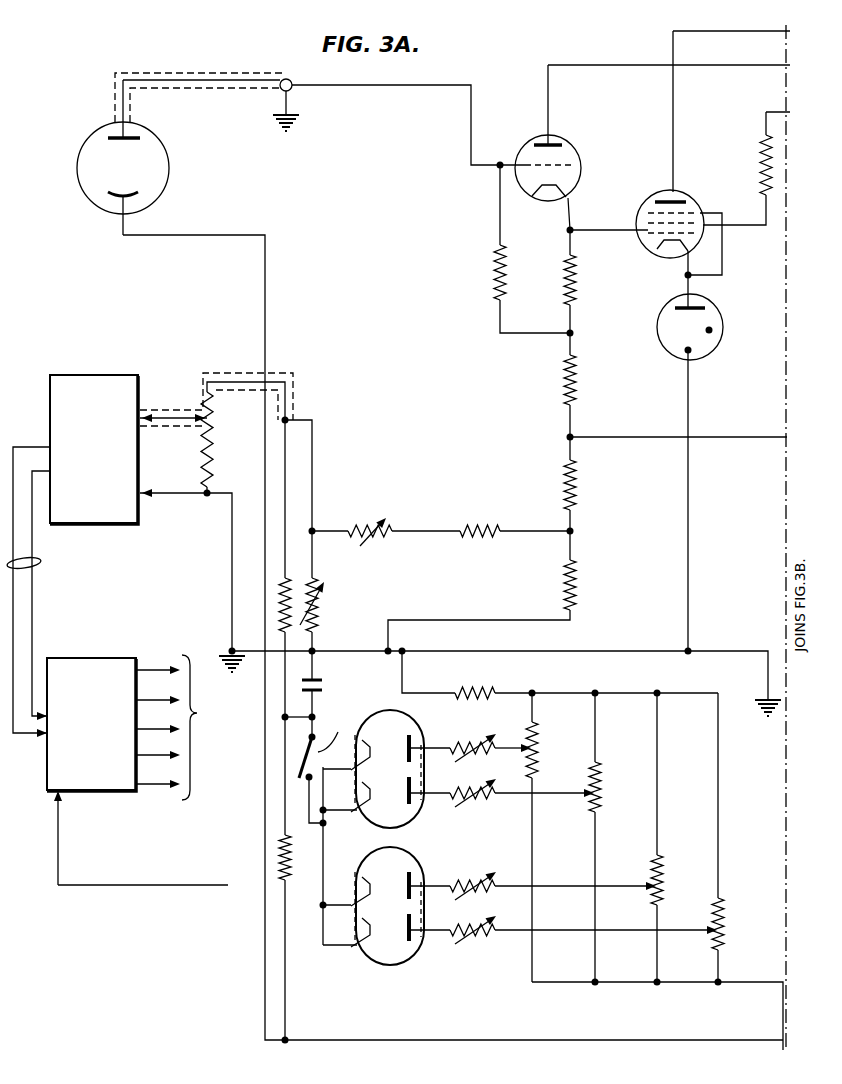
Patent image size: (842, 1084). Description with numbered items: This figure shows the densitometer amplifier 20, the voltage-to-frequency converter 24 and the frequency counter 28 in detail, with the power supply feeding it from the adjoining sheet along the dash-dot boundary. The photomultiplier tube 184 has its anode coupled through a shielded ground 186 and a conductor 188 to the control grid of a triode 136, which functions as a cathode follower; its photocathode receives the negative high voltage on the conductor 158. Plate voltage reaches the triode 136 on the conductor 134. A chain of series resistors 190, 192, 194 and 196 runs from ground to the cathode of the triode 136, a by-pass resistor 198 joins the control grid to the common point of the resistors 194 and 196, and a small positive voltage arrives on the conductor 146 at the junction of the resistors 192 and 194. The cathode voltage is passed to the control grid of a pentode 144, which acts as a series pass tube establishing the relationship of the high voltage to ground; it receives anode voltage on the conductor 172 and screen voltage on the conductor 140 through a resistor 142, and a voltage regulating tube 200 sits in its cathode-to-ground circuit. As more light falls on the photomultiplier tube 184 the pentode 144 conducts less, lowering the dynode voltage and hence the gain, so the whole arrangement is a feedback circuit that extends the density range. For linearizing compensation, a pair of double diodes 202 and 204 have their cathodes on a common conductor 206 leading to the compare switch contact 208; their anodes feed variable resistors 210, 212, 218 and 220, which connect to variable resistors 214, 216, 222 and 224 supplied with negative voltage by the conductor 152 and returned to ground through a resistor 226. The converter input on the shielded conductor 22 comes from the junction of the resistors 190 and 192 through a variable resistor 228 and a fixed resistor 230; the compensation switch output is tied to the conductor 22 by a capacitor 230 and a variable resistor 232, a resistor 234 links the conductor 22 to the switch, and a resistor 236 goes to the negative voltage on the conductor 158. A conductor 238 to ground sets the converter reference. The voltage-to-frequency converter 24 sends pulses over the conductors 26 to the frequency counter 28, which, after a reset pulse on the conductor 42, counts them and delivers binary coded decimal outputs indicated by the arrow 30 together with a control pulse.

The densitometer amplifier 20 is at (533, 70).
The shielded conductor 22 is at (161, 410).
The voltage-to-frequency converter 24 is at (100, 375).
The conductors 26 is at (41, 562).
The frequency counter 28 is at (80, 658).
The arrow 30 is at (198, 756).
The conductor 42 is at (60, 838).
The conductor 134 is at (757, 64).
The triode 136 is at (580, 160).
The conductor 140 is at (766, 111).
The resistor 142 is at (760, 157).
The pentode 144 is at (645, 206).
The conductor 146 is at (757, 437).
The conductor 152 is at (750, 970).
The conductor 158 is at (181, 237).
The conductor 172 is at (757, 31).
The photomultiplier tube 184 is at (166, 193).
The shielded ground 186 is at (221, 72).
The conductor 188 is at (388, 87).
The resistor 190 is at (578, 583).
The resistor 192 is at (578, 488).
The resistor 194 is at (578, 383).
The resistor 196 is at (578, 283).
The by-pass resistor 198 is at (500, 279).
The voltage regulating tube 200 is at (712, 353).
The double diode 202 is at (412, 712).
The double diode 204 is at (412, 849).
The common conductor 206 is at (330, 865).
The compare switch contact 208 is at (306, 780).
The variable resistor 210 is at (504, 740).
The variable resistor 212 is at (478, 803).
The variable resistor 214 is at (536, 742).
The variable resistor 216 is at (600, 793).
The variable resistor 218 is at (504, 878).
The variable resistor 220 is at (478, 940).
The variable resistor 222 is at (652, 877).
The variable resistor 224 is at (740, 911).
The resistor 226 is at (480, 691).
The variable resistor 228 is at (373, 540).
The fixed value resistor and capacitor 230 is at (471, 541).
The variable resistor 232 is at (319, 609).
The resistor 234 is at (280, 604).
The resistor 236 is at (280, 857).
The conductor 238 is at (173, 495).